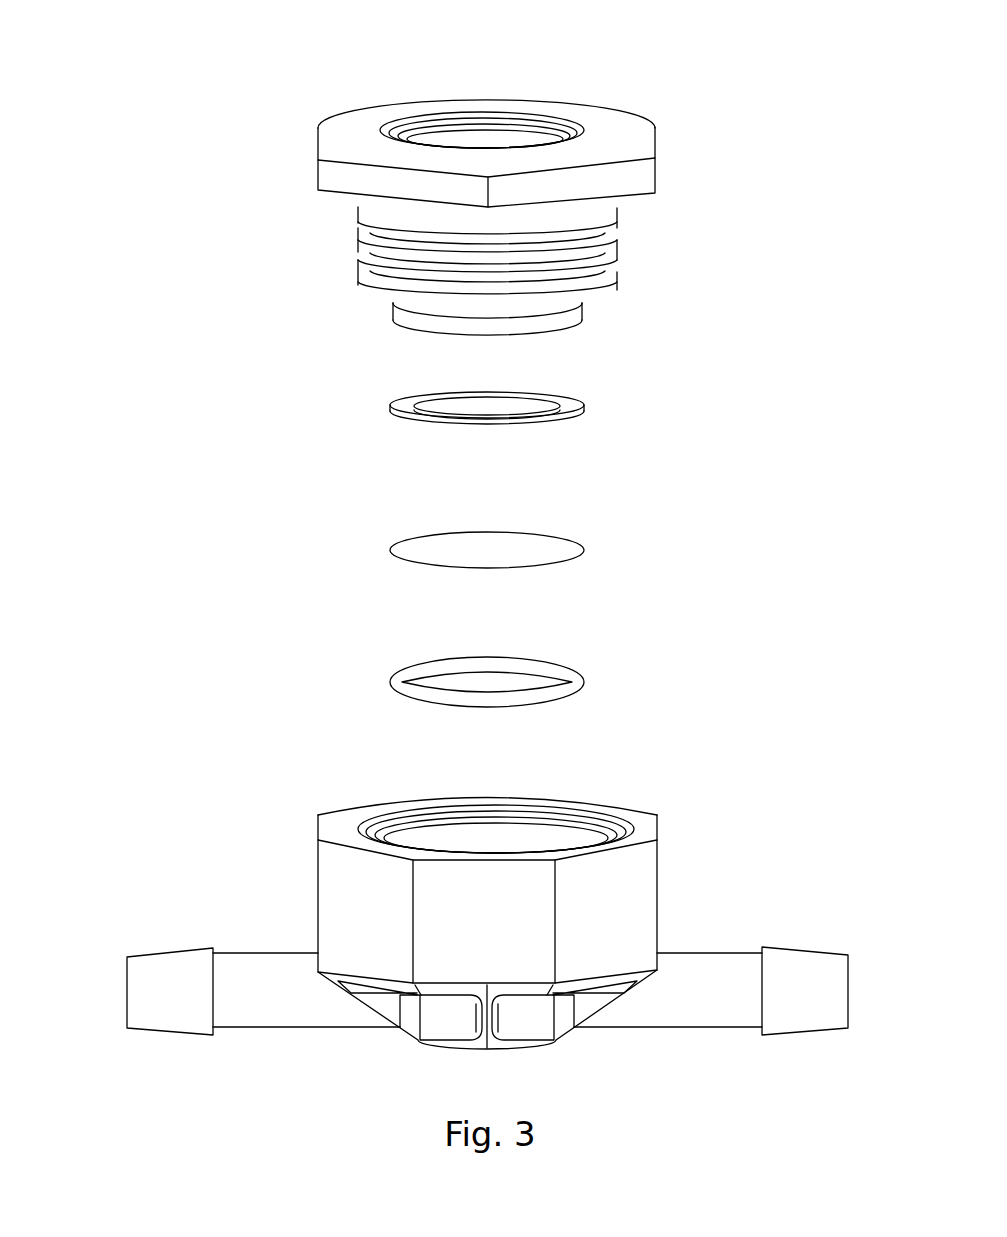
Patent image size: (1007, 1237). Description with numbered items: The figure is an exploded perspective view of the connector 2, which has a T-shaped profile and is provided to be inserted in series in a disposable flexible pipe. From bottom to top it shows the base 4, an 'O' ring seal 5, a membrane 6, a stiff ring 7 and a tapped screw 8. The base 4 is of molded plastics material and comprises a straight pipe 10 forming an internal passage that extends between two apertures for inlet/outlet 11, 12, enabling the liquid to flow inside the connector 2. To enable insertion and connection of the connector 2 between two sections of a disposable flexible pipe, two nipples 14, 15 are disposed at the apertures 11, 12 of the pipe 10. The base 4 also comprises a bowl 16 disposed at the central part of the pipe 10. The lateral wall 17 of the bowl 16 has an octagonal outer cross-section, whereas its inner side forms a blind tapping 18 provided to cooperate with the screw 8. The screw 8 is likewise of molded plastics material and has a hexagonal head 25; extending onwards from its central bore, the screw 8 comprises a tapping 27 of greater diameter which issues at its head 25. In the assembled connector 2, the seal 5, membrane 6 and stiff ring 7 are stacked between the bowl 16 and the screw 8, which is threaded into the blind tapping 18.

The connector 2 is at (826, 67).
The base 4 is at (819, 848).
The 'O' ring seal 5 is at (621, 668).
The membrane 6 is at (621, 538).
The stiff ring 7 is at (621, 400).
The tapped screw 8 is at (702, 218).
The straight pipe 10 is at (683, 1013).
The aperture for inlet/outlet 11 is at (107, 982).
The aperture for inlet/outlet 12 is at (861, 963).
The nipple 14 is at (173, 1022).
The nipple 15 is at (802, 1022).
The bowl 16 is at (645, 818).
The lateral wall 17 is at (650, 893).
The blind tapping 18 is at (512, 828).
The hexagonal head 25 is at (648, 173).
The tapping 27 is at (483, 118).